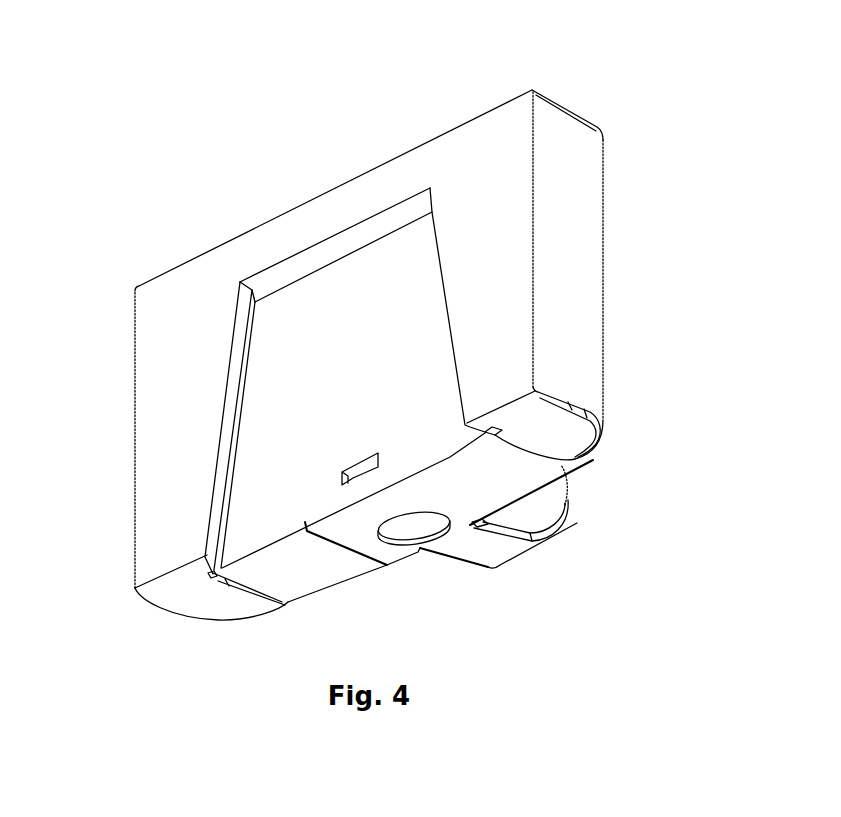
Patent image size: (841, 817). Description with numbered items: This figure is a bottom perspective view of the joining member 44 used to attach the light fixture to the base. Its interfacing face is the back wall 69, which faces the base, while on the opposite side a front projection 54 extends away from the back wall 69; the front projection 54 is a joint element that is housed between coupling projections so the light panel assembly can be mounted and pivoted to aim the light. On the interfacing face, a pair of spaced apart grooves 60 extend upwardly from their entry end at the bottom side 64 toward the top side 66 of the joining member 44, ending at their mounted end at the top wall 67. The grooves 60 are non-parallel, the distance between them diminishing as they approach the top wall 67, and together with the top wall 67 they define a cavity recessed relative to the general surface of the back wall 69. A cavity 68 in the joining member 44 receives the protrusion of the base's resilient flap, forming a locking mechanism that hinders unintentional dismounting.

The joining member 44 is at (237, 121).
The top side 66 is at (167, 244).
The top wall 67 is at (403, 215).
The back wall 69 is at (503, 143).
The grooves 60 is at (580, 458).
The bottom side 64 is at (523, 470).
The front projection 54 is at (538, 514).
The cavity 68 is at (357, 480).